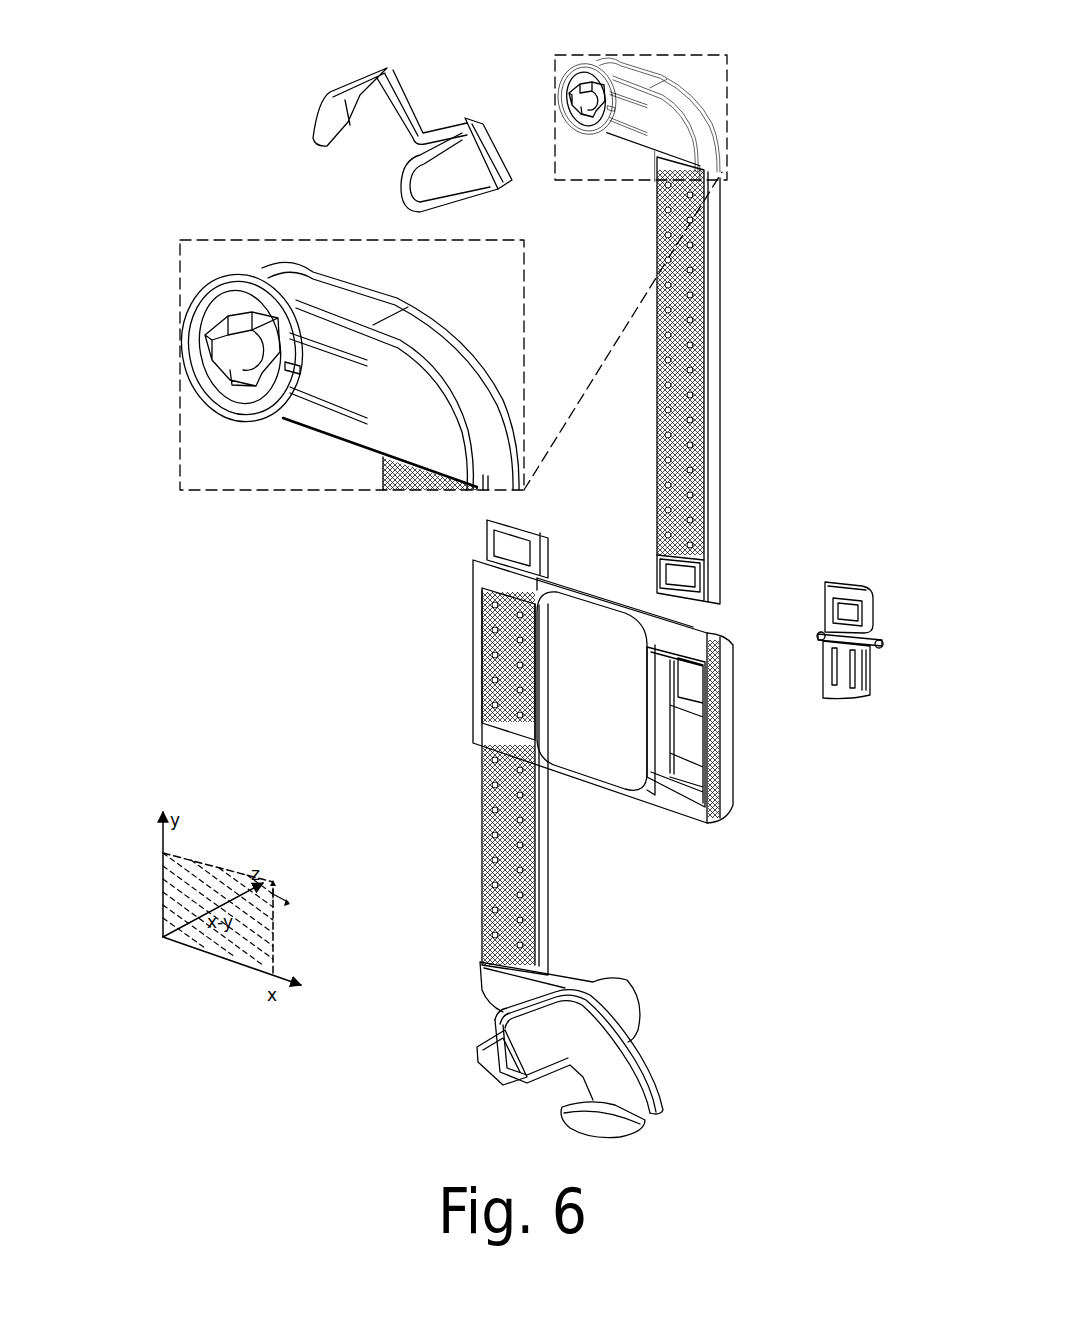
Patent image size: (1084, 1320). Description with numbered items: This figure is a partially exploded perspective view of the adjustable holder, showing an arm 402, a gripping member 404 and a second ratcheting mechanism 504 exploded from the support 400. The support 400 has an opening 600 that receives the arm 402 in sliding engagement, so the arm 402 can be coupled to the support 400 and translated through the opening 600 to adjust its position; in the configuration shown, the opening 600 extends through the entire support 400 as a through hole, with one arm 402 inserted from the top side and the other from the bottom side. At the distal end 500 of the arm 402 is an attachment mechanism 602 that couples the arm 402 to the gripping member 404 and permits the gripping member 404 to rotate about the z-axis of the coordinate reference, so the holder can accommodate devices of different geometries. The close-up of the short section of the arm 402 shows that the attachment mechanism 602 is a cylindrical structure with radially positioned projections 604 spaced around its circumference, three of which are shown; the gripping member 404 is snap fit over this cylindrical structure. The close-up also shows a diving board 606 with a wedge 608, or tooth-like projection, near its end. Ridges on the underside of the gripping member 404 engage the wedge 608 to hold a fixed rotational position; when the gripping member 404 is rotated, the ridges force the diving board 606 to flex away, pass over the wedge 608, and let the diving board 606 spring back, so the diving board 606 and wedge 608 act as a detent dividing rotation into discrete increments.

The support 400 is at (602, 701).
The arm 402 is at (735, 302).
The gripping member 404 is at (346, 76).
The distal end 500 is at (709, 101).
The second ratcheting mechanism 504 is at (843, 572).
The opening 600 is at (699, 628).
The attachment mechanism 602 is at (577, 120).
The projections 604 is at (240, 314).
The diving board 606 is at (347, 386).
The wedge 608 is at (288, 424).